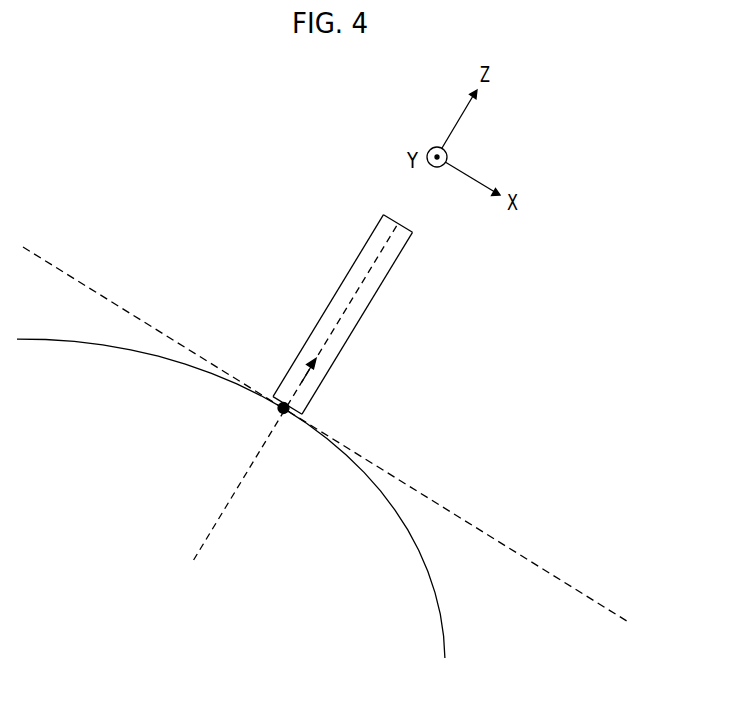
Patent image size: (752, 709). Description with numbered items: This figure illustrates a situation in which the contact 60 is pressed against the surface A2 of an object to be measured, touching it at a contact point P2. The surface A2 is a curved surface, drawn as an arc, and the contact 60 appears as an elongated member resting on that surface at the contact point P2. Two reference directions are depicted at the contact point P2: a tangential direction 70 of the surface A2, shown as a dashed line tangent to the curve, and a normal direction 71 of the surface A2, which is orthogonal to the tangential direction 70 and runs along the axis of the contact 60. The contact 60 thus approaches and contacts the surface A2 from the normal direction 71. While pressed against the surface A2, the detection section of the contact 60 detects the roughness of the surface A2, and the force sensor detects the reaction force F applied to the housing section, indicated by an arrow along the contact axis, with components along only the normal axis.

The contact 60 is at (345, 280).
The tangential direction 70 is at (565, 583).
The normal direction 71 is at (220, 512).
The surface A2 is at (433, 588).
The contact point P2 is at (289, 426).
The reaction force F is at (298, 388).